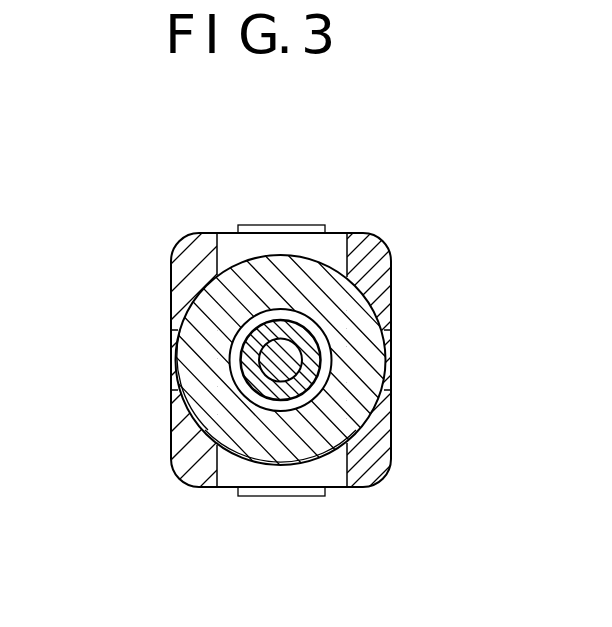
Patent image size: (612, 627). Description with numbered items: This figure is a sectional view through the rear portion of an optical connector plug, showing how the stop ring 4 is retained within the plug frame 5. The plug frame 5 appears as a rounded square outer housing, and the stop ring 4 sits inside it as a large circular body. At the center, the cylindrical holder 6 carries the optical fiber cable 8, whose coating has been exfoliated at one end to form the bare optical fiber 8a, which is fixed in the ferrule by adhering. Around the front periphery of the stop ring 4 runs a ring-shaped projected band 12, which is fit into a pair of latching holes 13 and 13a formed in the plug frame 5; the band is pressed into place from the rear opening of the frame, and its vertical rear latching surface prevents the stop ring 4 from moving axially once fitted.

The stop ring 4 is at (243, 257).
The plug frame 5 is at (170, 282).
The holder 6 is at (282, 360).
The optical fiber cable 8 is at (300, 348).
The optical fiber 8a is at (215, 410).
The projected band 12 is at (250, 463).
The latching hole 13 is at (337, 247).
The latching hole 13a is at (323, 472).